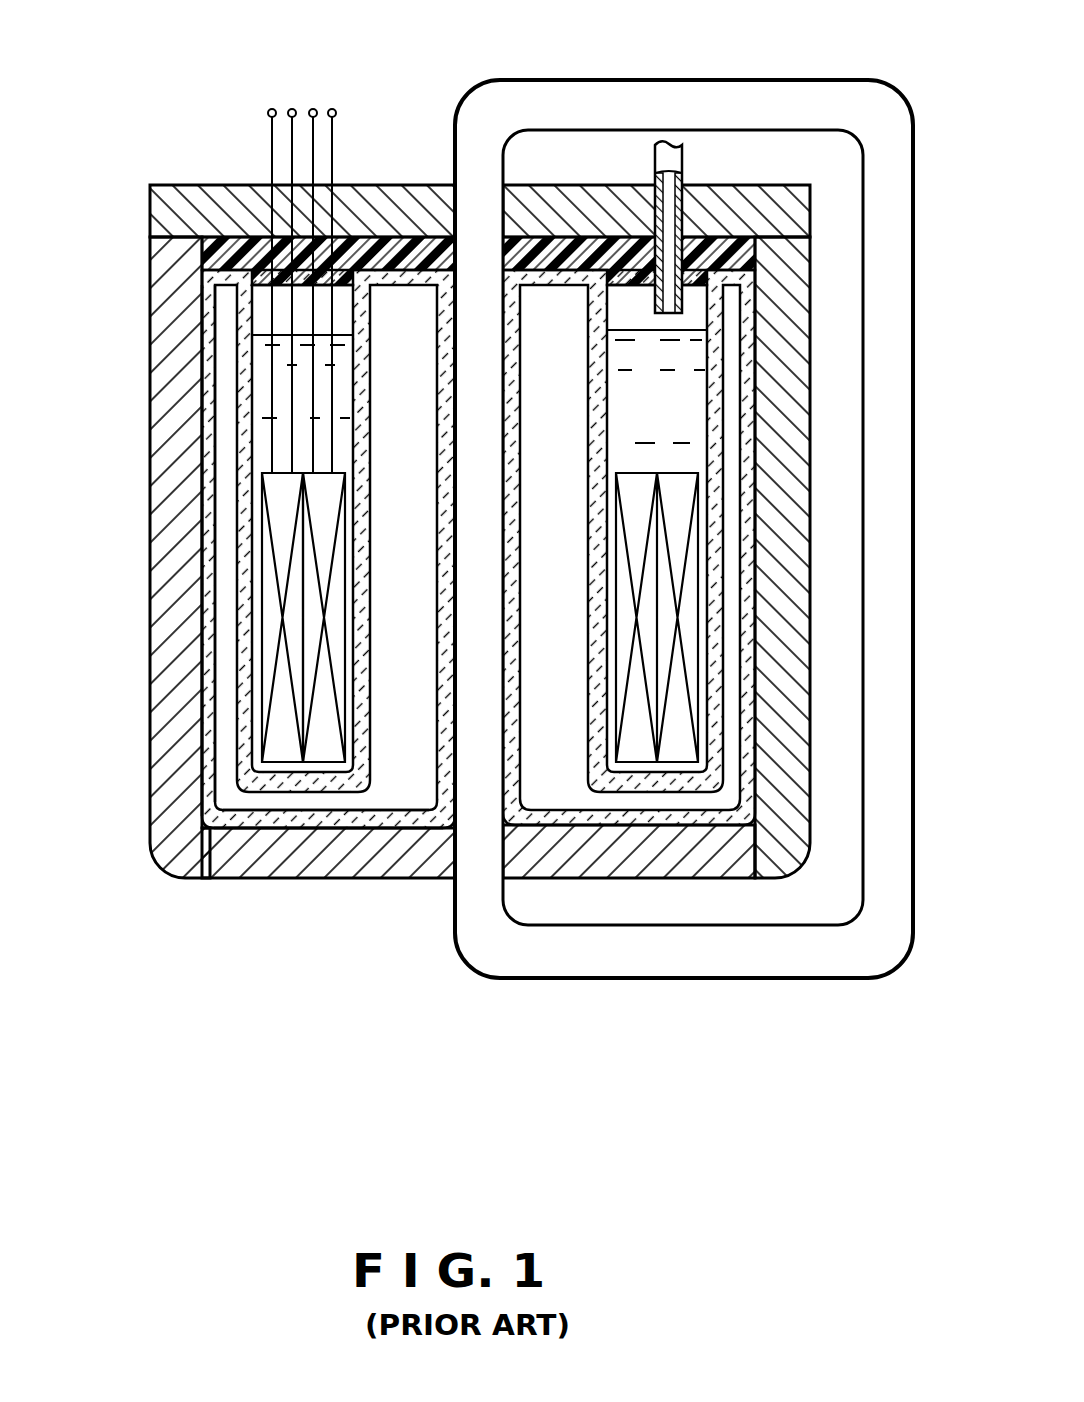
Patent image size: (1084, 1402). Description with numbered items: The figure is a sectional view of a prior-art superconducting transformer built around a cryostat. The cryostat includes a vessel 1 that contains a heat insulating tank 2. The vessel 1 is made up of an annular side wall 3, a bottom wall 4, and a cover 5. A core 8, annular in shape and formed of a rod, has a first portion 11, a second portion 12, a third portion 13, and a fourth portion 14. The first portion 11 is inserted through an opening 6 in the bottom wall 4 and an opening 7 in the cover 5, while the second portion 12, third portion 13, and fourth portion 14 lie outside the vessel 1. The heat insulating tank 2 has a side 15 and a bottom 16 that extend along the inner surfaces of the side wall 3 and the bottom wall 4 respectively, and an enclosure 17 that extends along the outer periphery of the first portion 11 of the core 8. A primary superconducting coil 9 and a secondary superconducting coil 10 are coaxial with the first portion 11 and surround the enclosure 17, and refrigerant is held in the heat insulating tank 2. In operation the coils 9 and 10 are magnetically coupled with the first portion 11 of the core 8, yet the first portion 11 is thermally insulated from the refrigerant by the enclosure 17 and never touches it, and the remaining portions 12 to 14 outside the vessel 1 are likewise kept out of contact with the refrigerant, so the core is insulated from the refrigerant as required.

The vessel 1 is at (145, 265).
The heat insulating tank 2 is at (194, 363).
The annular side wall 3 is at (163, 531).
The bottom wall 4 is at (373, 866).
The cover 5 is at (379, 196).
The opening 6 is at (455, 856).
The opening 7 is at (497, 205).
The core 8 is at (583, 984).
The primary superconducting coil 9 is at (266, 560).
The secondary superconducting coil 10 is at (327, 735).
The first portion 11 is at (483, 478).
The second portion 12 is at (733, 103).
The third portion 13 is at (893, 460).
The fourth portion 14 is at (703, 960).
The side 15 is at (200, 450).
The bottom 16 is at (330, 822).
The enclosure 17 is at (611, 397).